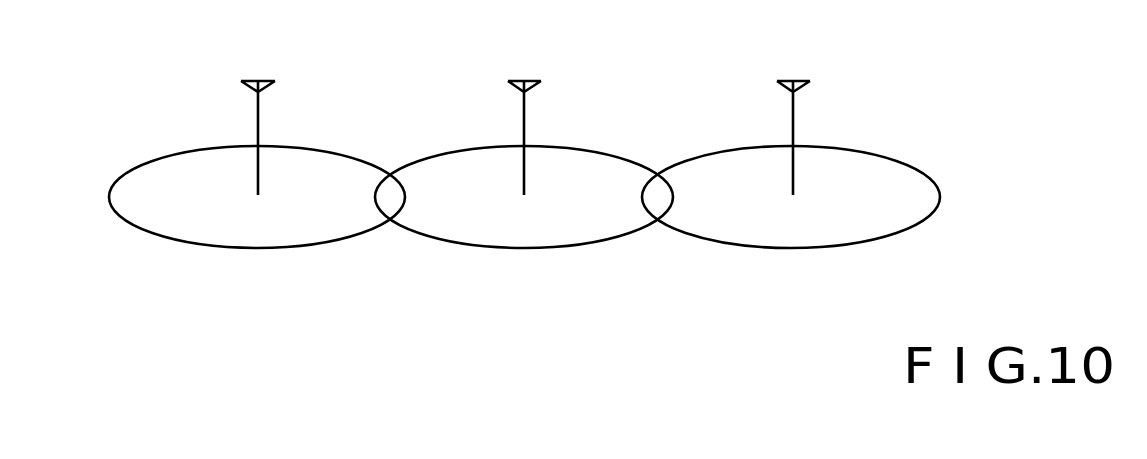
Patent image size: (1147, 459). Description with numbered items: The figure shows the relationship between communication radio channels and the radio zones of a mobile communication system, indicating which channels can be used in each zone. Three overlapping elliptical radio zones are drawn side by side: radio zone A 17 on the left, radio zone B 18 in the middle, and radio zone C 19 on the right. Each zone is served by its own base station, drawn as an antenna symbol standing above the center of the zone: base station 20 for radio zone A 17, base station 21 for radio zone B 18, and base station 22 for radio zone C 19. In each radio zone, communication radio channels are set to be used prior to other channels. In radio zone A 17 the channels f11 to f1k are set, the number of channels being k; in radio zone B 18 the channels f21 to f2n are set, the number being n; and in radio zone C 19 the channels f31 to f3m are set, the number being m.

The radio zone A 17 is at (169, 155).
The radio zone B 18 is at (441, 155).
The radio zone C 19 is at (709, 155).
The base station 20 is at (242, 78).
The base station 21 is at (517, 78).
The base station 22 is at (786, 78).